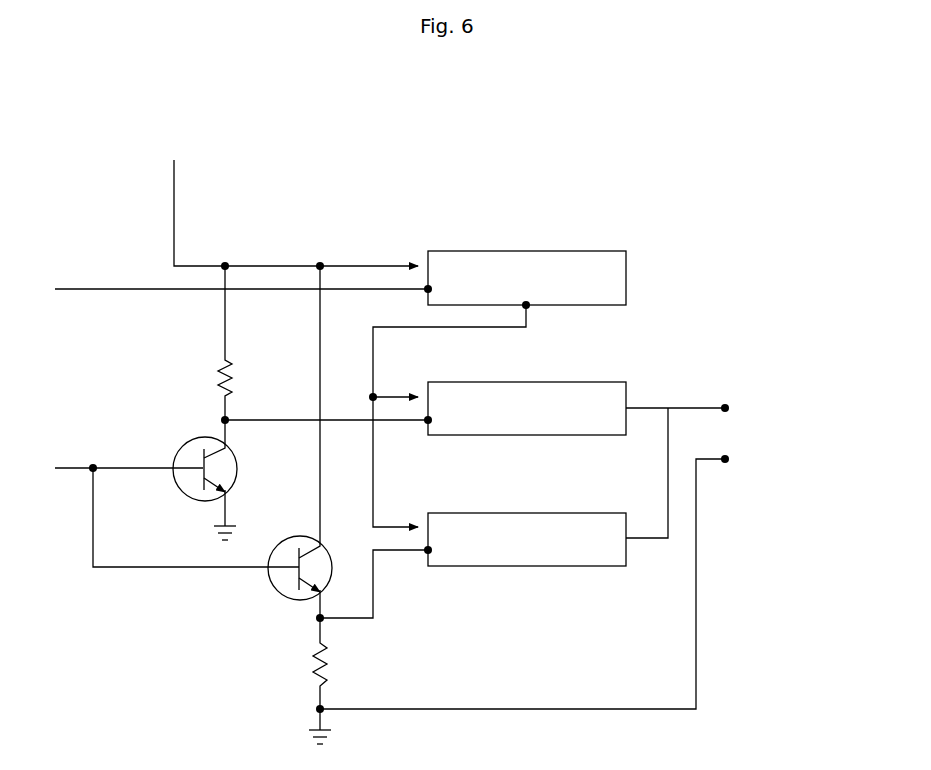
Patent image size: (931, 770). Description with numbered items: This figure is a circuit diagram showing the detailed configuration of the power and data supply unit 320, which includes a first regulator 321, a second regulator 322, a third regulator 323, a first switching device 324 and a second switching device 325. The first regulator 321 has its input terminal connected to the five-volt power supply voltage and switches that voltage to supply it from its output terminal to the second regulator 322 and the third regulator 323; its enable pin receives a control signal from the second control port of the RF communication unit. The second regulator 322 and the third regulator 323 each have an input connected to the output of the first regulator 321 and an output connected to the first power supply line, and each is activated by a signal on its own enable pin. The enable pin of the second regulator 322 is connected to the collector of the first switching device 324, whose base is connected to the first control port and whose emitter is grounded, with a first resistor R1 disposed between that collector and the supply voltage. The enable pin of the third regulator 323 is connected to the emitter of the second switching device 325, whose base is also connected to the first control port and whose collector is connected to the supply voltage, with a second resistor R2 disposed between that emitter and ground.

The power and data supply unit 320 is at (525, 85).
The first regulator 321 is at (582, 251).
The second regulator 322 is at (597, 382).
The third regulator 323 is at (585, 513).
The first switching device 324 is at (178, 452).
The second switching device 325 is at (277, 590).
The first resistor R1 is at (211, 345).
The second resistor R2 is at (307, 681).